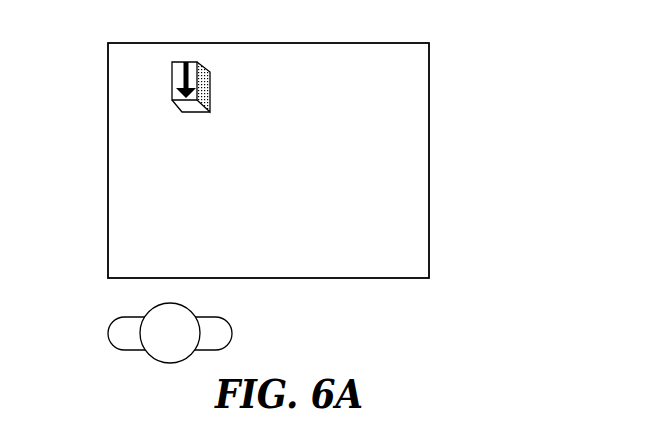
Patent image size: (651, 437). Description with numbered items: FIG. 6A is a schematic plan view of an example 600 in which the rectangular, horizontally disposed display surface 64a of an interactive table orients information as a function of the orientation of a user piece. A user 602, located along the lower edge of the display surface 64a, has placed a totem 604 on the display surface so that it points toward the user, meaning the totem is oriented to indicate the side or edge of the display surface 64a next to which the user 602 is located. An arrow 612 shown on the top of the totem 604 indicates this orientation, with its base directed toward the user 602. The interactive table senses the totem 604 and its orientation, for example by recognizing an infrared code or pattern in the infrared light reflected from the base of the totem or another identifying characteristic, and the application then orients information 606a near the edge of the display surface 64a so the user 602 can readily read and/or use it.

The display surface 64a is at (107, 93).
The totem 604 is at (185, 62).
The arrow 612 is at (197, 63).
The information 606a is at (153, 247).
The user 602 is at (107, 333).
The example 600 is at (463, 298).